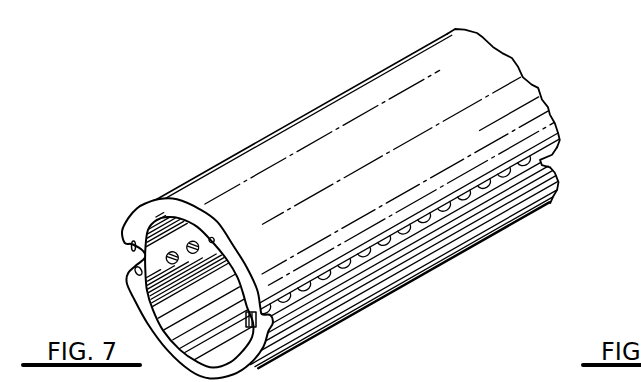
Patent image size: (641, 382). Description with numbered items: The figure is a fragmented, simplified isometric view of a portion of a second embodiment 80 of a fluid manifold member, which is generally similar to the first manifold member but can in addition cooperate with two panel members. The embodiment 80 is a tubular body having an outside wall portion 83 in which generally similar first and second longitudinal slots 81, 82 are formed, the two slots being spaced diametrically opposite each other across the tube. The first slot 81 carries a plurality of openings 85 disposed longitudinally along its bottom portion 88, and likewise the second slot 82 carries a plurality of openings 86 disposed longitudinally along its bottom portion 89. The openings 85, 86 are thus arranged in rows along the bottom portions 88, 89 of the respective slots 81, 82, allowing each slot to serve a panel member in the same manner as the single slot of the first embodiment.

The second embodiment of fluid manifold member 80 is at (350, 70).
The first longitudinal slot 81 is at (556, 164).
The second longitudinal slot 82 is at (126, 266).
The outside wall portion 83 is at (520, 92).
The openings 85 is at (247, 321).
The openings 86 is at (195, 243).
The bottom portion of first slot 88 is at (541, 161).
The bottom portion of second slot 89 is at (134, 259).